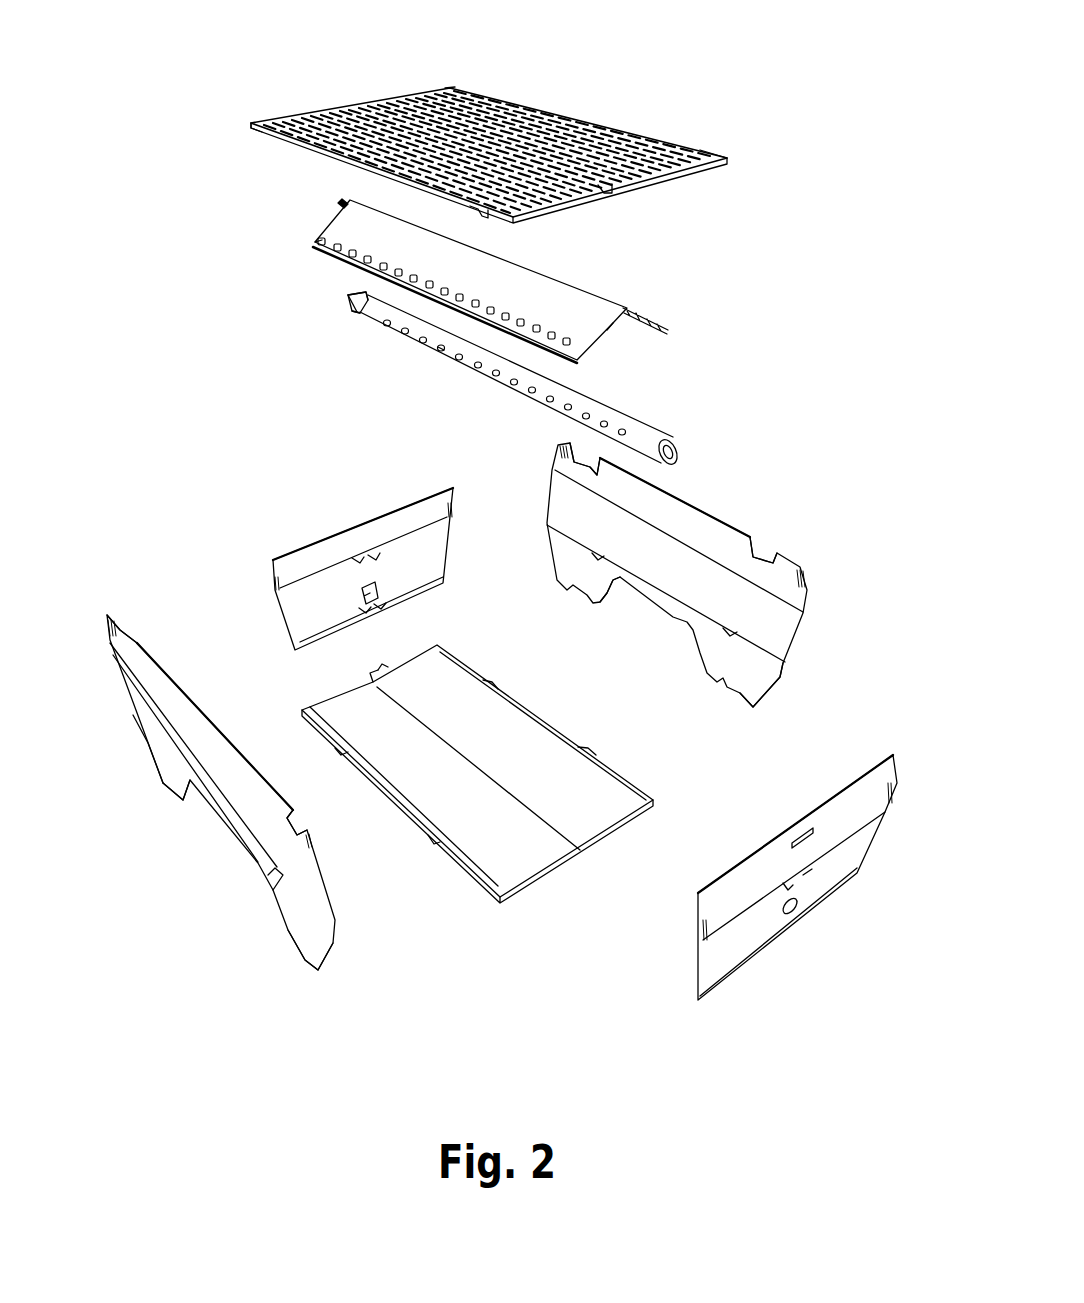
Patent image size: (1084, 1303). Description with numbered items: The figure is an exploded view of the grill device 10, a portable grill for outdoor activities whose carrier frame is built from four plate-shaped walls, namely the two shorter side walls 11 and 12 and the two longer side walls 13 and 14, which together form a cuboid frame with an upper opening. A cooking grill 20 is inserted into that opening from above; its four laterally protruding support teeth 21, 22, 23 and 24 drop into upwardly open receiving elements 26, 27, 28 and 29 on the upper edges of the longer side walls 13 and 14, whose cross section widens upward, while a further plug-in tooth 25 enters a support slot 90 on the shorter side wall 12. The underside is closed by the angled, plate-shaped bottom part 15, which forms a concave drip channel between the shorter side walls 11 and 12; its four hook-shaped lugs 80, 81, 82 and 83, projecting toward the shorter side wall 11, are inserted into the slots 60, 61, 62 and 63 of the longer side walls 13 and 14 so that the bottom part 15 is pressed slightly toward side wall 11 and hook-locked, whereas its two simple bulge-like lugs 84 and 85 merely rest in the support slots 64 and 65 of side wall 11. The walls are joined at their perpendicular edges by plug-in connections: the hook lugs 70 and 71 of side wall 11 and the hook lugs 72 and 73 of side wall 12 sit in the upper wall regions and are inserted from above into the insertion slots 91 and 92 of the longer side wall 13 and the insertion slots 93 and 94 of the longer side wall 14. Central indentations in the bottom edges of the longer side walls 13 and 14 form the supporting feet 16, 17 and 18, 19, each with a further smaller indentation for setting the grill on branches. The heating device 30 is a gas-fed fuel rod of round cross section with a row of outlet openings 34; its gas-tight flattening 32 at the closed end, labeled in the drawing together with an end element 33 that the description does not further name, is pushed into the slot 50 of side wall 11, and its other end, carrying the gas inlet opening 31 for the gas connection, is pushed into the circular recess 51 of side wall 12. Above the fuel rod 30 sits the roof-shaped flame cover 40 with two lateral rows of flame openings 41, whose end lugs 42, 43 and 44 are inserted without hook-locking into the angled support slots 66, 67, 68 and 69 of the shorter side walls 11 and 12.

The grill device 10 is at (818, 402).
The shorter side wall 11 is at (312, 545).
The shorter side wall 12 is at (870, 840).
The longer side wall 13 is at (180, 690).
The longer side wall 14 is at (802, 640).
The bottom part 15 is at (533, 868).
The supporting foot 16 is at (183, 803).
The supporting foot 17 is at (315, 965).
The supporting foot 18 is at (600, 598).
The supporting foot 19 is at (757, 675).
The cooking grill 20 is at (448, 90).
The support tooth 21 is at (258, 130).
The support tooth 22 is at (478, 87).
The support tooth 23 is at (475, 212).
The support tooth 24 is at (705, 155).
The plug-in tooth 25 is at (620, 192).
The receiving element 26 is at (125, 625).
The receiving element 27 is at (293, 812).
The receiving element 28 is at (590, 458).
The receiving element 29 is at (760, 548).
The heating device 30 is at (635, 425).
The gas inlet opening 31 is at (680, 458).
The flattening 32 is at (356, 314).
The tube cap 33 is at (352, 300).
The outlet opening 34 is at (440, 351).
The flame cover 40 is at (572, 298).
The flame opening 41 is at (313, 244).
The lug 42 is at (623, 322).
The lug 43 is at (650, 318).
The lug 44 is at (341, 201).
The slot 50 is at (378, 585).
The circular recess 51 is at (796, 915).
The slot 60 is at (160, 752).
The slot 61 is at (273, 885).
The slot 62 is at (598, 556).
The slot 63 is at (730, 632).
The support slot 64 is at (362, 612).
The support slot 65 is at (385, 606).
The support slot 66 is at (358, 560).
The support slot 67 is at (374, 557).
The support slot 68 is at (782, 886).
The support slot 69 is at (812, 872).
The hook lug 70 is at (273, 585).
The hook lug 71 is at (452, 510).
The hook lug 72 is at (702, 935).
The hook lug 73 is at (893, 785).
The lug 80 is at (342, 753).
The lug 81 is at (433, 842).
The lug 82 is at (495, 680).
The lug 83 is at (590, 748).
The lug 84 is at (370, 678).
The lug 85 is at (385, 668).
The support slot 90 is at (795, 835).
The insertion slot 91 is at (108, 624).
The insertion slot 92 is at (312, 842).
The insertion slot 93 is at (562, 450).
The insertion slot 94 is at (805, 580).